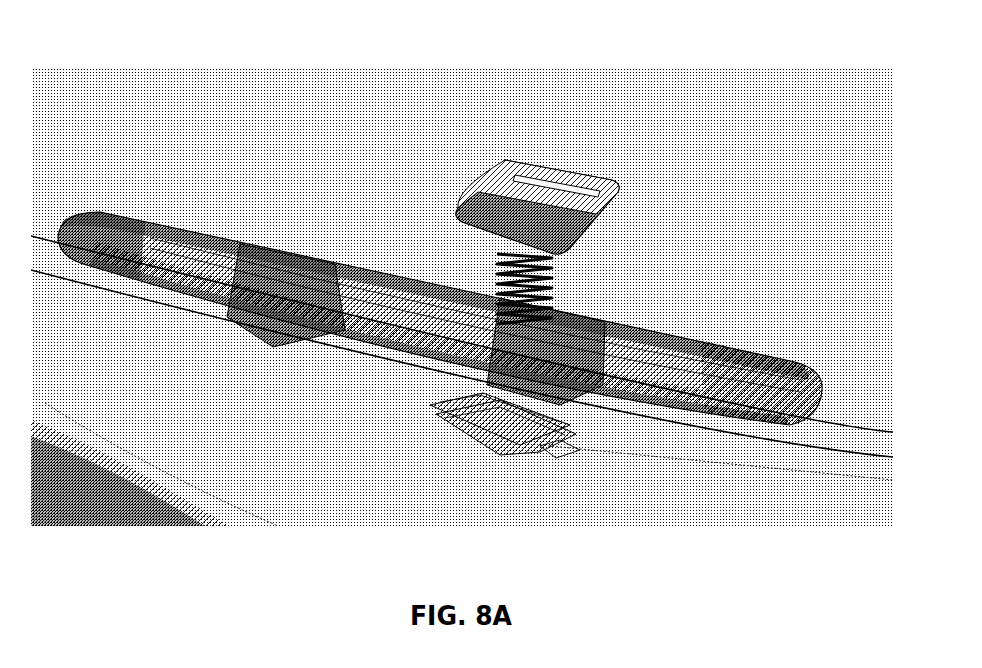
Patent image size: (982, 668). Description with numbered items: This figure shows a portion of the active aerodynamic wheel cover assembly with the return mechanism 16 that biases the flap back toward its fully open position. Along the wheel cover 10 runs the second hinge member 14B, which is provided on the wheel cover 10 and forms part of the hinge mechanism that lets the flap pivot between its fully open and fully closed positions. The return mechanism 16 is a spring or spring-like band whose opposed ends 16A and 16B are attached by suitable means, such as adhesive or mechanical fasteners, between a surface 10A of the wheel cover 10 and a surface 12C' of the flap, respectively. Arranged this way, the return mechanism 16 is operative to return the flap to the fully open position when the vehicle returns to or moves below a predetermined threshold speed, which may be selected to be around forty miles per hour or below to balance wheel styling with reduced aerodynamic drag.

The wheel cover 10 is at (320, 457).
The surface of the wheel cover 10A is at (566, 458).
The surface of the flap 12C' is at (550, 106).
The second hinge member 14B is at (263, 318).
The return mechanism 16 is at (572, 424).
The end of the return mechanism 16A is at (513, 412).
The end of the return mechanism 16B is at (556, 216).